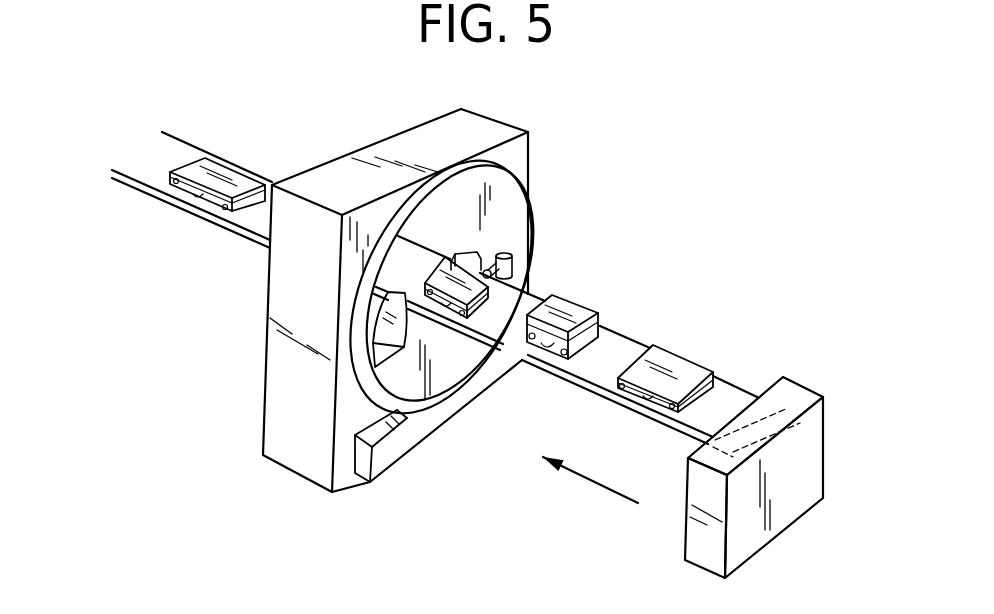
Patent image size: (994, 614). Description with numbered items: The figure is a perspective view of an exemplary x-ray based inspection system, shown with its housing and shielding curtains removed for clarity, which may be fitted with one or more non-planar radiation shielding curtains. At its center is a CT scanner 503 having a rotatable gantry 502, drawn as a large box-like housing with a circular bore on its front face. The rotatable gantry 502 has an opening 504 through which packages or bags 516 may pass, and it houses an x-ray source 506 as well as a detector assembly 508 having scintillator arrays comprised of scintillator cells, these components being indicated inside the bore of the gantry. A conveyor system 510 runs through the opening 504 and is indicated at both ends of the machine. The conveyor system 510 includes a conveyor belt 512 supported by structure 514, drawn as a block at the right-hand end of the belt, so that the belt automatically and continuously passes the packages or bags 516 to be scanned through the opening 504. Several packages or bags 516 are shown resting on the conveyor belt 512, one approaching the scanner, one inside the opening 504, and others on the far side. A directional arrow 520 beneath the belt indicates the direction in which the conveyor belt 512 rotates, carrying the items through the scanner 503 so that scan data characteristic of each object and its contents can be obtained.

The rotatable gantry 502 is at (524, 208).
The CT scanner 503 is at (520, 105).
The opening 504 is at (476, 253).
The x-ray source 506 is at (513, 268).
The detector assembly 508 is at (399, 348).
The conveyor system 510 is at (120, 196).
The conveyor belt 512 is at (243, 221).
The structure 514 is at (813, 455).
The packages or bags 516 is at (230, 172).
The directional arrow 520 is at (592, 485).